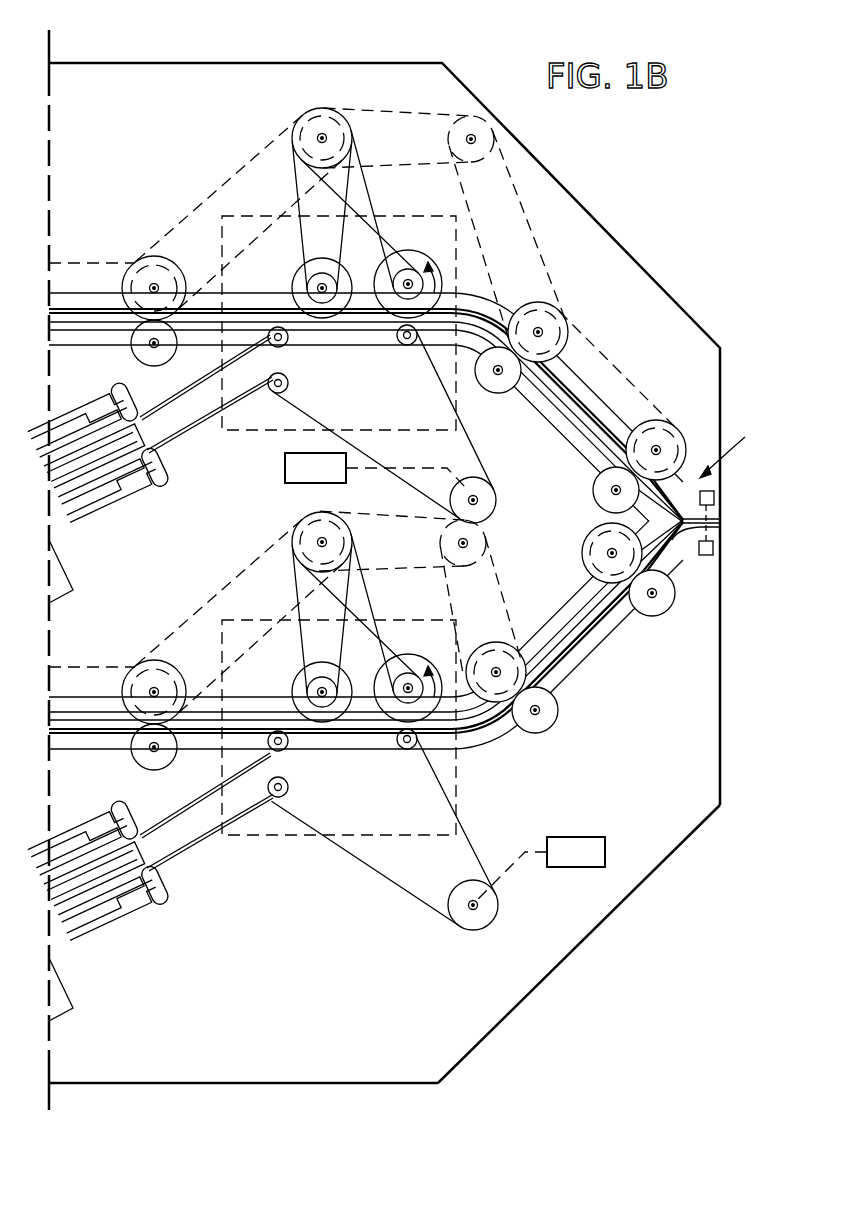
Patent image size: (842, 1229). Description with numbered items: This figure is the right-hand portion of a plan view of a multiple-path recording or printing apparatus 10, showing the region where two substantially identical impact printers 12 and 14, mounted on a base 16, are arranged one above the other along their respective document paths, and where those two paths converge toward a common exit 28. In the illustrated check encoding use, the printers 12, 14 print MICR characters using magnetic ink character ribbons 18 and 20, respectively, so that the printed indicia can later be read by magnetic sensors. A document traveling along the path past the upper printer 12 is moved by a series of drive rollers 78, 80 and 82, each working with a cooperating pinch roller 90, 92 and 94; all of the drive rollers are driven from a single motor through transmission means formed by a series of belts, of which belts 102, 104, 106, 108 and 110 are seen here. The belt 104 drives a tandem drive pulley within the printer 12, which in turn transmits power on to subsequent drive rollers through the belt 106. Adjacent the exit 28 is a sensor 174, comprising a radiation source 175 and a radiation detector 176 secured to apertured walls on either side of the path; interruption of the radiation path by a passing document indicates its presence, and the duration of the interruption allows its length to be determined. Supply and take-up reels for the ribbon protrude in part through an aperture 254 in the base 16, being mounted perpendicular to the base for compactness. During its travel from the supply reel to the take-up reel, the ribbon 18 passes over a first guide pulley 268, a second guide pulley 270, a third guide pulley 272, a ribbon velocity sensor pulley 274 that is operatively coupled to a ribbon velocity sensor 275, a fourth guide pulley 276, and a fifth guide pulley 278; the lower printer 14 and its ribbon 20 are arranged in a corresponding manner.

The printing apparatus 10 is at (298, 50).
The printer 12 is at (430, 215).
The printer 14 is at (458, 781).
The base 16 is at (631, 886).
The magnetic ink character ribbon 18 is at (476, 448).
The magnetic ink character ribbon 20 is at (373, 868).
The exit 28 is at (722, 527).
The drive roller 78 is at (170, 262).
The drive roller 80 is at (561, 312).
The drive roller 82 is at (678, 428).
The pinch roller 90 is at (135, 350).
The pinch roller 92 is at (498, 393).
The pinch roller 94 is at (598, 486).
The belt 102 is at (66, 262).
The belt 104 is at (268, 147).
The belt 106 is at (398, 113).
The belt 108 is at (540, 262).
The belt 110 is at (621, 376).
The sensor 174 is at (730, 452).
The radiation source 175 is at (714, 496).
The radiation detector 176 is at (706, 556).
The aperture 254 is at (130, 490).
The first guide pulley 268 is at (152, 414).
The second guide pulley 270 is at (282, 347).
The third guide pulley 272 is at (405, 346).
The ribbon velocity sensor pulley 274 is at (496, 500).
The ribbon velocity sensor 275 is at (280, 484).
The fourth guide pulley 276 is at (278, 393).
The fifth guide pulley 278 is at (162, 470).